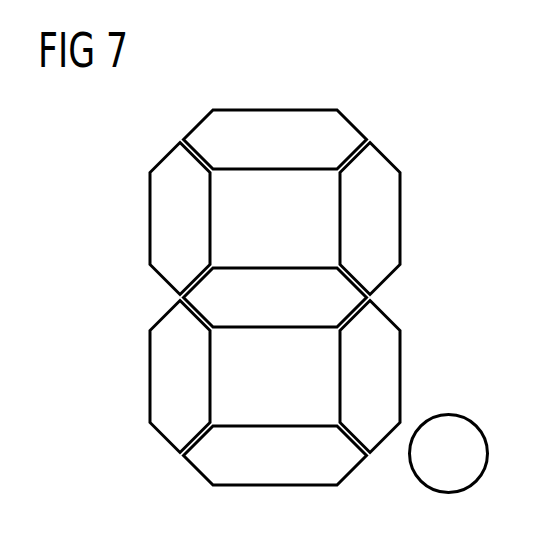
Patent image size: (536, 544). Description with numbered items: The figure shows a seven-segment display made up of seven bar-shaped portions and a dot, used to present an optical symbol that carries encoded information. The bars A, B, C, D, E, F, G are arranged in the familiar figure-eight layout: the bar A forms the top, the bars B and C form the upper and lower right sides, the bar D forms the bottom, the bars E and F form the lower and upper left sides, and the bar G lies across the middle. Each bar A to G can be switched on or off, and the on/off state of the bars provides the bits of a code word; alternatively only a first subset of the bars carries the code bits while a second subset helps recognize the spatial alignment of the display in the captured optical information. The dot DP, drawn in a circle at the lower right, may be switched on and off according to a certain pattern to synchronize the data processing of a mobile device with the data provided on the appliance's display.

The bar A is at (275, 139).
The bar B is at (370, 219).
The bar C is at (370, 377).
The bar D is at (275, 455).
The bar E is at (180, 377).
The bar F is at (180, 219).
The bar G is at (275, 297).
The dot DP is at (449, 454).